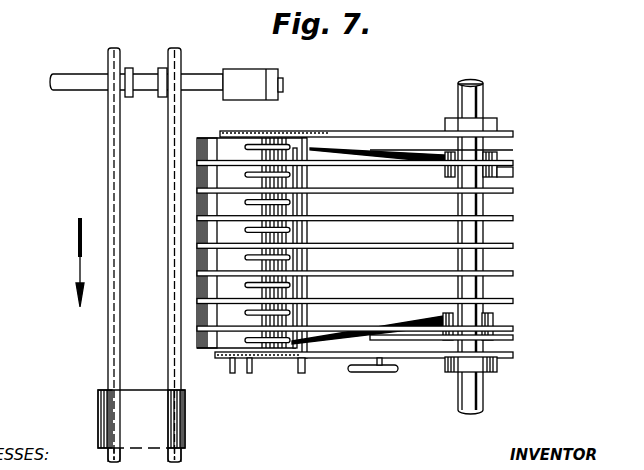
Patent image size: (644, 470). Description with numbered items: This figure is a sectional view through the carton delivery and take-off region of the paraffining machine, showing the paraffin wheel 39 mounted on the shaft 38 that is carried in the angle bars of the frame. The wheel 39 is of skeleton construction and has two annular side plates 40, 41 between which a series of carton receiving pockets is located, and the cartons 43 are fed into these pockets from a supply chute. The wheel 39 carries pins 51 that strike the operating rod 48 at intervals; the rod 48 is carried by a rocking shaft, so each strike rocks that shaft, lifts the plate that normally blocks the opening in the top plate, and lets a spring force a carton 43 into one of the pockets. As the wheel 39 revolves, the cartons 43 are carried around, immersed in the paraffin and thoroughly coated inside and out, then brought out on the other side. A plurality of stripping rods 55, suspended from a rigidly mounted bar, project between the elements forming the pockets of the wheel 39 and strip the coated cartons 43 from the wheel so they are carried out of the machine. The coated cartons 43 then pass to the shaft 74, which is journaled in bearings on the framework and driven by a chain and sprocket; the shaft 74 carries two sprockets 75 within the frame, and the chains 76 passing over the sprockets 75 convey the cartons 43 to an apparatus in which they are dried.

The shaft 38 is at (477, 110).
The paraffin wheel 39 is at (507, 275).
The annular side plate 40 is at (362, 131).
The annular side plate 41 is at (345, 360).
The cartons 43 is at (217, 148).
The operating rod 48 is at (379, 372).
The pins 51 is at (249, 374).
The stripping rods 55 is at (290, 231).
The shaft 74 is at (63, 75).
The sprockets 75 is at (162, 67).
The chains 76 is at (168, 290).